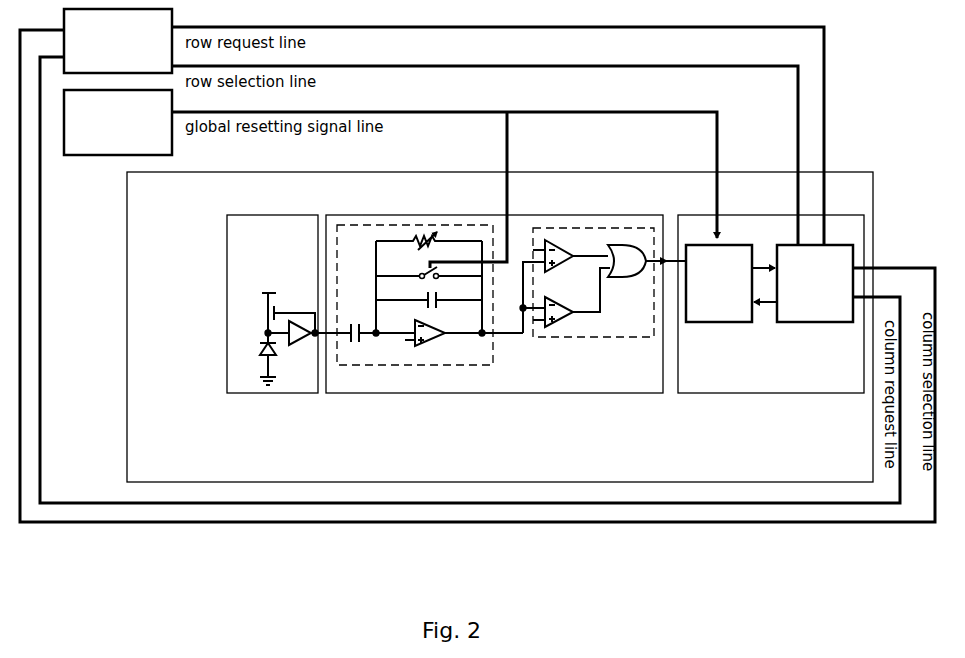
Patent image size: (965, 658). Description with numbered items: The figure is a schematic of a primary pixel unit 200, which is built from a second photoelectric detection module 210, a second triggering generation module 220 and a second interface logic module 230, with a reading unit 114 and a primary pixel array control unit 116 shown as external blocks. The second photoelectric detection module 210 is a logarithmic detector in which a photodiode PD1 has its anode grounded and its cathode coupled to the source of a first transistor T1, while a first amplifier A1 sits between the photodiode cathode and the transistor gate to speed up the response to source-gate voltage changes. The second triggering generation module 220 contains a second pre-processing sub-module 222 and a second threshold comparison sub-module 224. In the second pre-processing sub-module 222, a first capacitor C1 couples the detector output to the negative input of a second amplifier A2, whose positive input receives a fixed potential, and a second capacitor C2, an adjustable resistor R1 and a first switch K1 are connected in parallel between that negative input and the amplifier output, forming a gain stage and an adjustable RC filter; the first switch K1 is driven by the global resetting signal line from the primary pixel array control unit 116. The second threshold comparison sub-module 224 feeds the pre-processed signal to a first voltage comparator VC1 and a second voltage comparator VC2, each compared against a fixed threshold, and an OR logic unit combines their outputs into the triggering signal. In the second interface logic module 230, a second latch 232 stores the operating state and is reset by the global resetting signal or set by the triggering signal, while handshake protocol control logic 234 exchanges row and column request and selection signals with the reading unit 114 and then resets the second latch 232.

The reading unit 114 is at (118, 41).
The primary pixel array control unit 116 is at (118, 122).
The primary pixel unit 200 is at (500, 327).
The second photoelectric detection module 210 is at (289, 333).
The second triggering generation module 220 is at (506, 319).
The second pre-processing sub-module 222 is at (430, 273).
The second threshold comparison sub-module 224 is at (603, 261).
The second interface logic module 230 is at (771, 337).
The second latch 232 is at (719, 283).
The handshake protocol control logic 234 is at (815, 283).
The first transistor T1 is at (283, 318).
The photodiode PD1 is at (279, 364).
The first amplifier A1 is at (308, 337).
The first capacitor C1 is at (361, 327).
The adjustable resistor R1 is at (429, 244).
The first switch K1 is at (429, 279).
The second capacitor C2 is at (429, 304).
The second amplifier A2 is at (449, 338).
The first voltage comparator VC1 is at (570, 263).
The second voltage comparator VC2 is at (571, 304).